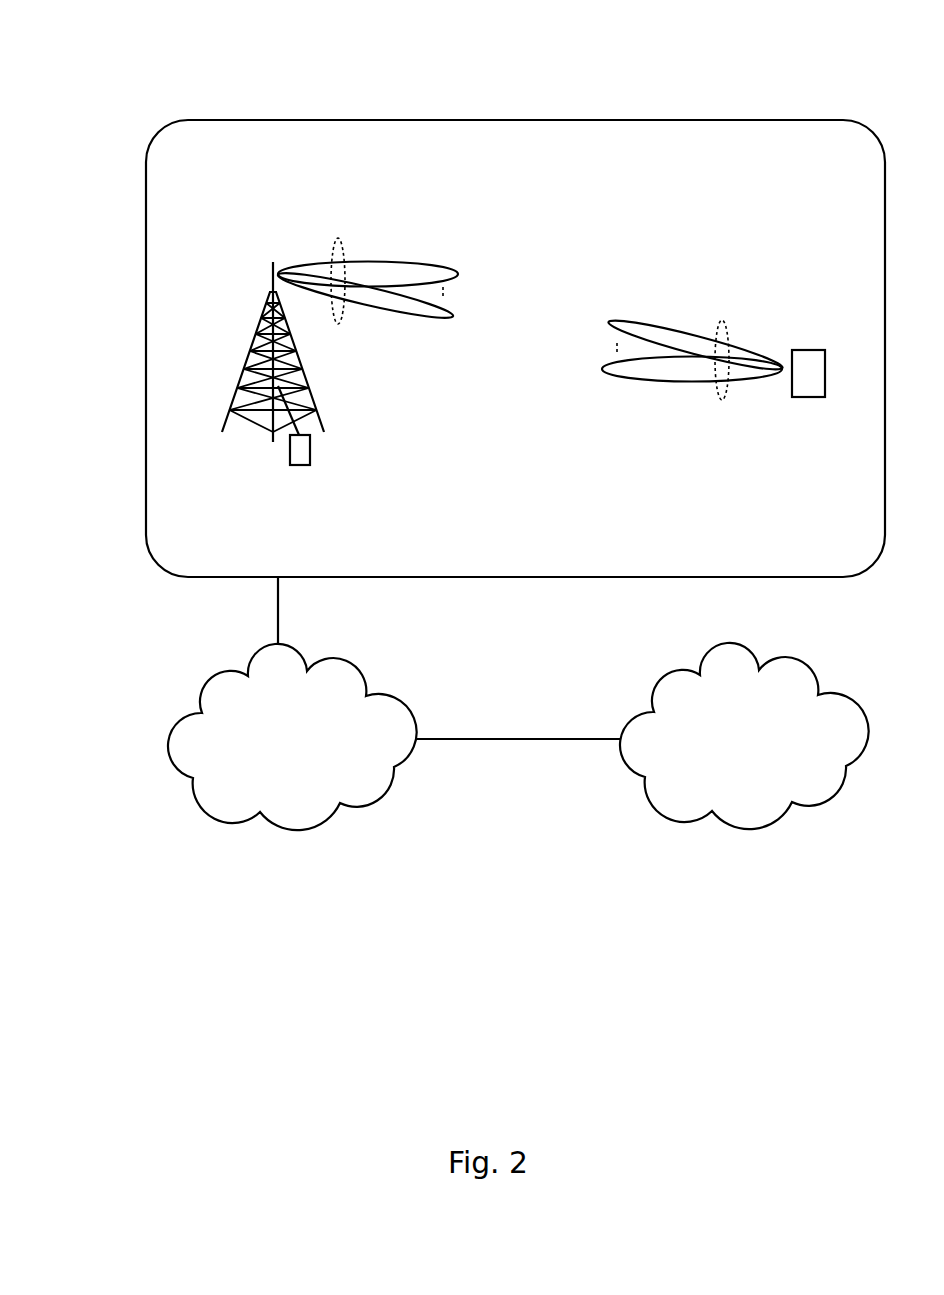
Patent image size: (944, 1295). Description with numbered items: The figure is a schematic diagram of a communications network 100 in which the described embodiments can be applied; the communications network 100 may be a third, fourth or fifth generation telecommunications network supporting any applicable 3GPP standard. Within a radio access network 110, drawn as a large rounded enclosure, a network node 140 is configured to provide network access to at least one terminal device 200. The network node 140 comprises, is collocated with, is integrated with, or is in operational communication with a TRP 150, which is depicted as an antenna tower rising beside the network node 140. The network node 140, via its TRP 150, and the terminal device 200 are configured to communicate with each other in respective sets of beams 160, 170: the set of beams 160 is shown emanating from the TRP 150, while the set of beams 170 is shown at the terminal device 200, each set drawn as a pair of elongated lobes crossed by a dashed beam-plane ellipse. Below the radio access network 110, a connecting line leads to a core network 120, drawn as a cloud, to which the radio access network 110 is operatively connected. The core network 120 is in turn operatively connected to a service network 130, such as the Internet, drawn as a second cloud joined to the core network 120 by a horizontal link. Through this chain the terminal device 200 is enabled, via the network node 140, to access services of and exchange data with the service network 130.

The communications network 100 is at (222, 58).
The radio access network 110 is at (146, 399).
The core network 120 is at (322, 759).
The service network 130 is at (773, 756).
The network node 140 is at (290, 457).
The TRP 150 is at (270, 279).
The set of beams 160 is at (336, 238).
The set of beams 170 is at (722, 400).
The terminal device 200 is at (810, 397).